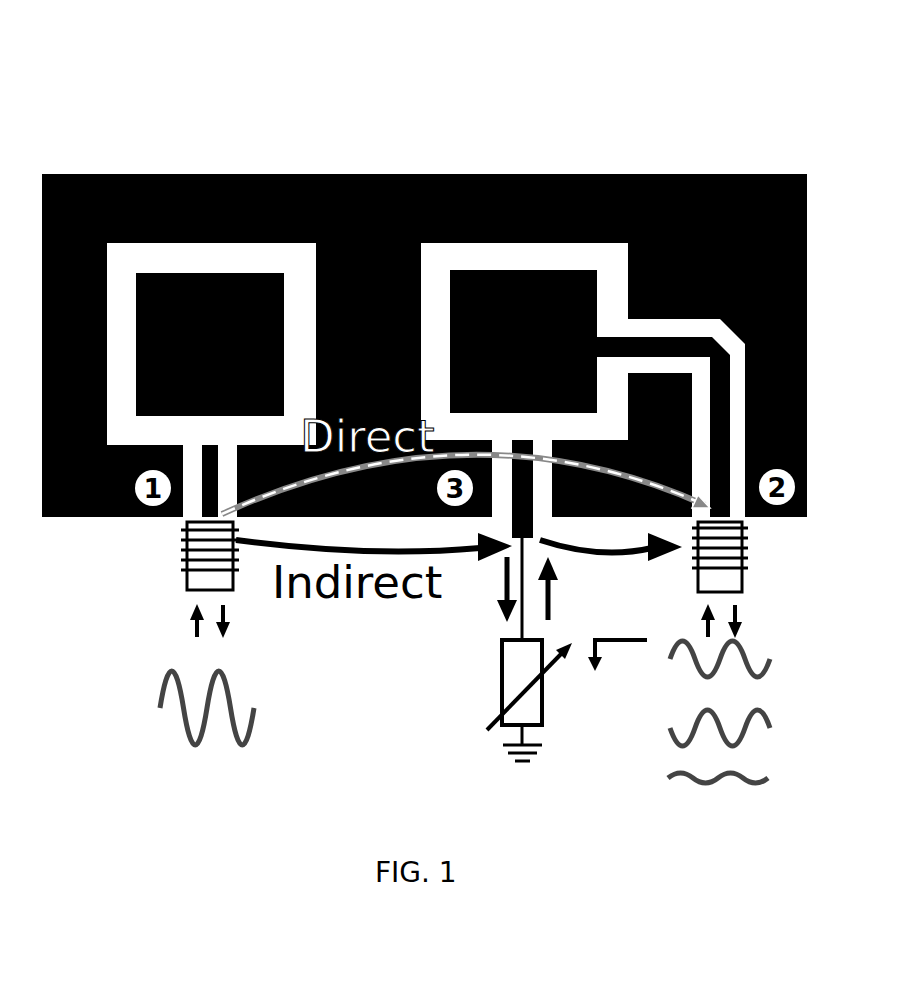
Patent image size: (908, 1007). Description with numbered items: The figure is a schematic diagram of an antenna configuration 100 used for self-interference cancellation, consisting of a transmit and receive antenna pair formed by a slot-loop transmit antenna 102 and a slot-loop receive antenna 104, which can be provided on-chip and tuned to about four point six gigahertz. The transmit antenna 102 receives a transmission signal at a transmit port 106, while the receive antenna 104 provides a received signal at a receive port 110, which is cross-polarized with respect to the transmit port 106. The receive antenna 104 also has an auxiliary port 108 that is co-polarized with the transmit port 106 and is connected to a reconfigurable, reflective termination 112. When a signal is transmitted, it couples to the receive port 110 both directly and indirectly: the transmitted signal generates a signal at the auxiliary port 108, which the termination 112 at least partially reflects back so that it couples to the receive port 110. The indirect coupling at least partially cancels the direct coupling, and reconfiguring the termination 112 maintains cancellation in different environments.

The antenna system 100 is at (846, 47).
The slot-loop transmit antenna 102 is at (236, 140).
The slot-loop receive antenna 104 is at (567, 137).
The transmit port 106 is at (150, 602).
The auxiliary port 108 is at (469, 632).
The receive port 110 is at (820, 617).
The reflective termination 112 is at (498, 694).